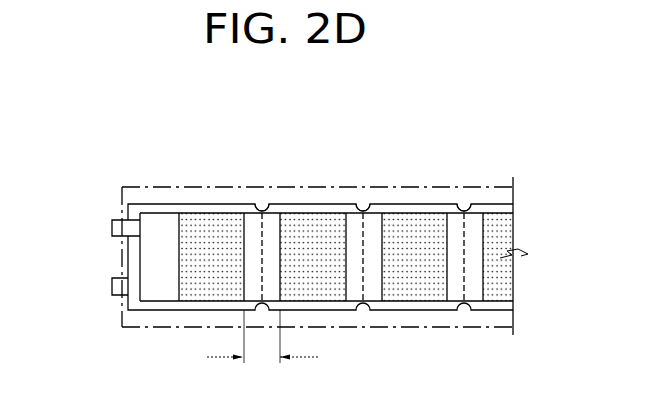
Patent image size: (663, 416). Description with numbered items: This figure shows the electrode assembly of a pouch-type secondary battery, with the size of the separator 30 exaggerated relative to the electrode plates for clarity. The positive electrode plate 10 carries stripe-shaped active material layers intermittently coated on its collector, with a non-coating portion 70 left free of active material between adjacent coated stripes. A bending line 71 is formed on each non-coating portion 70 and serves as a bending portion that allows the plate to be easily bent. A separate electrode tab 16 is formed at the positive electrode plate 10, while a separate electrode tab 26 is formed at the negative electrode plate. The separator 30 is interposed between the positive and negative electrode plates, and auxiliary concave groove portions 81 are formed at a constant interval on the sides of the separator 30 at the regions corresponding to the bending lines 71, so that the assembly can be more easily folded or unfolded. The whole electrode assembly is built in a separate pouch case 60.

The positive electrode plate 10 is at (209, 213).
The electrode tab 16 is at (116, 228).
The electrode tab 26 is at (113, 288).
The separator 30 is at (151, 198).
The pouch case 60 is at (443, 179).
The non-coating portion 70 is at (263, 347).
The bending line 71 is at (270, 240).
The auxiliary concave groove portion 81 is at (363, 206).